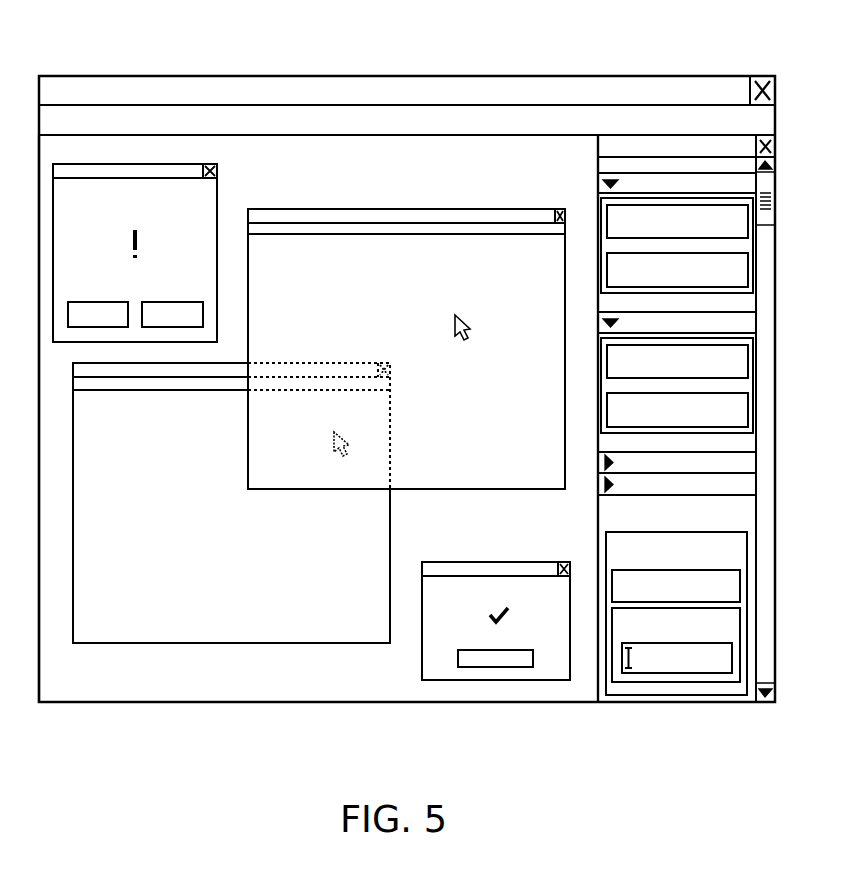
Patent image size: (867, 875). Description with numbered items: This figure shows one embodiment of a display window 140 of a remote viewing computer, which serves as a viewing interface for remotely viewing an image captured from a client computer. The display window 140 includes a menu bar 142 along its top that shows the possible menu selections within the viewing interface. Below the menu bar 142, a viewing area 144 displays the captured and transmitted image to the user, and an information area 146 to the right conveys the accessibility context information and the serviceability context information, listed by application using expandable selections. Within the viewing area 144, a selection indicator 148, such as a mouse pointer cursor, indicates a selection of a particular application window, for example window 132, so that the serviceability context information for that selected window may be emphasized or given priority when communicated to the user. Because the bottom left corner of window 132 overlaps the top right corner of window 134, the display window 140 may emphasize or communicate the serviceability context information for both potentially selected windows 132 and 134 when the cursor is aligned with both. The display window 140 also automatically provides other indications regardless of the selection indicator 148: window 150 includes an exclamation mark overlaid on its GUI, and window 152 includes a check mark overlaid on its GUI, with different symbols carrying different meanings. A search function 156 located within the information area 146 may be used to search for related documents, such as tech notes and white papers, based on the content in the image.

The display window 140 is at (107, 75).
The menu bar 142 is at (487, 118).
The viewing area 144 is at (421, 163).
The information area 146 is at (660, 150).
The application window 132 is at (503, 209).
The application window 134 is at (277, 643).
The selection indicator 148 is at (460, 318).
The window 150 is at (162, 164).
The window 152 is at (533, 680).
The search function 156 is at (687, 695).